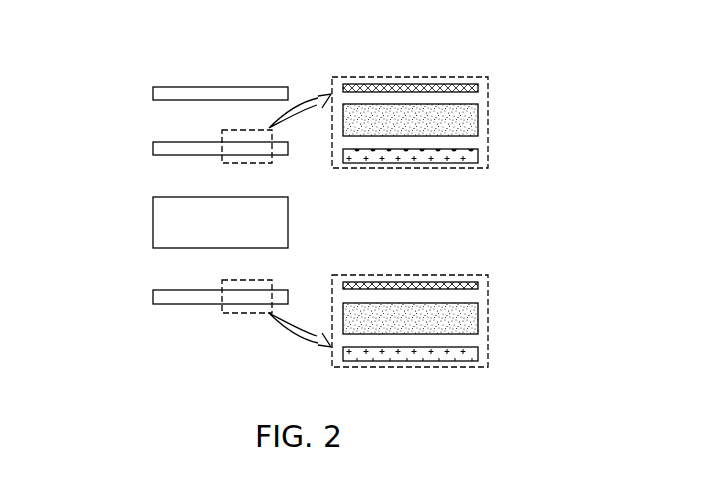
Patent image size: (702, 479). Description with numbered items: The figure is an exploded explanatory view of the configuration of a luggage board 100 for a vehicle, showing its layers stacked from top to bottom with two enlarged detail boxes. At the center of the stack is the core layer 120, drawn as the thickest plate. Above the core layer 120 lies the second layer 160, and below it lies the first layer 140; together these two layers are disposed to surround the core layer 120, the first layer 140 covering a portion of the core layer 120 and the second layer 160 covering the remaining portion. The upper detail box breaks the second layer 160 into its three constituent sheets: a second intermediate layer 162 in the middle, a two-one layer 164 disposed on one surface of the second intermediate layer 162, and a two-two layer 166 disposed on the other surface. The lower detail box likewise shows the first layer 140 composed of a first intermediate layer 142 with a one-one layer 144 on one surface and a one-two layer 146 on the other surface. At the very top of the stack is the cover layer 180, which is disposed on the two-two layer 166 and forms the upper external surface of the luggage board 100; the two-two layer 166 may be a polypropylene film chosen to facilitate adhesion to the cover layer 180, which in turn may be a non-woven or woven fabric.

The luggage board 100 is at (120, 53).
The core layer 120 is at (157, 222).
The first layer 140 is at (157, 297).
The first intermediate layer 142 is at (473, 320).
The 1-1 layer 144 is at (473, 355).
The 1-2 layer 146 is at (476, 286).
The second layer 160 is at (157, 147).
The second intermediate layer 162 is at (473, 122).
The 2-1 layer 164 is at (473, 156).
The 2-2 layer 166 is at (476, 88).
The cover layer 180 is at (157, 93).